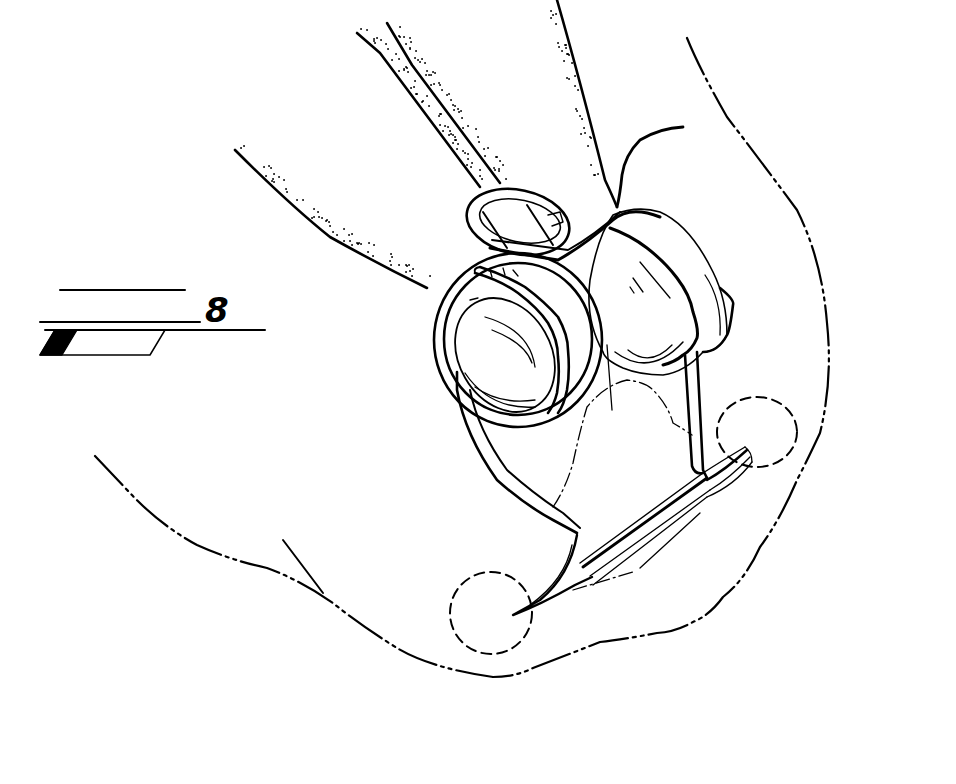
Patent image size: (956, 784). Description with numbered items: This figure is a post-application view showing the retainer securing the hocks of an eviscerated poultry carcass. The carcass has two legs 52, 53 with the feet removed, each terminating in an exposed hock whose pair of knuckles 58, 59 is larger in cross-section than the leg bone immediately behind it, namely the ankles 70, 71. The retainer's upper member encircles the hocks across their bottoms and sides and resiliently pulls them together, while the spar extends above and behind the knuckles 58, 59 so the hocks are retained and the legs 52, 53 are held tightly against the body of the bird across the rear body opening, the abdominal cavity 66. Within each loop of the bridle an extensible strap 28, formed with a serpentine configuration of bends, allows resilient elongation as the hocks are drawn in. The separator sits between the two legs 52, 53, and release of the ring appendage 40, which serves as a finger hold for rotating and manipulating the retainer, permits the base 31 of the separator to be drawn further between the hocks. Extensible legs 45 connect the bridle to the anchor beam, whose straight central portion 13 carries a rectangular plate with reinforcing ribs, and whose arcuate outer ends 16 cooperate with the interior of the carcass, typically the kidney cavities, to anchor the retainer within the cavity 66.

The straight central portion 13 is at (668, 533).
The outer ends 16 is at (513, 613).
The extensible strap 28 is at (497, 293).
The base 31 is at (640, 240).
The appendage 40 is at (535, 178).
The extensible legs 45 is at (500, 477).
The leg 52 is at (508, 60).
The leg 53 is at (368, 153).
The knuckle 58 is at (695, 385).
The knuckle 59 is at (723, 285).
The abdominal cavity 66 is at (600, 400).
The ankle 70 is at (672, 161).
The ankle 71 is at (423, 290).